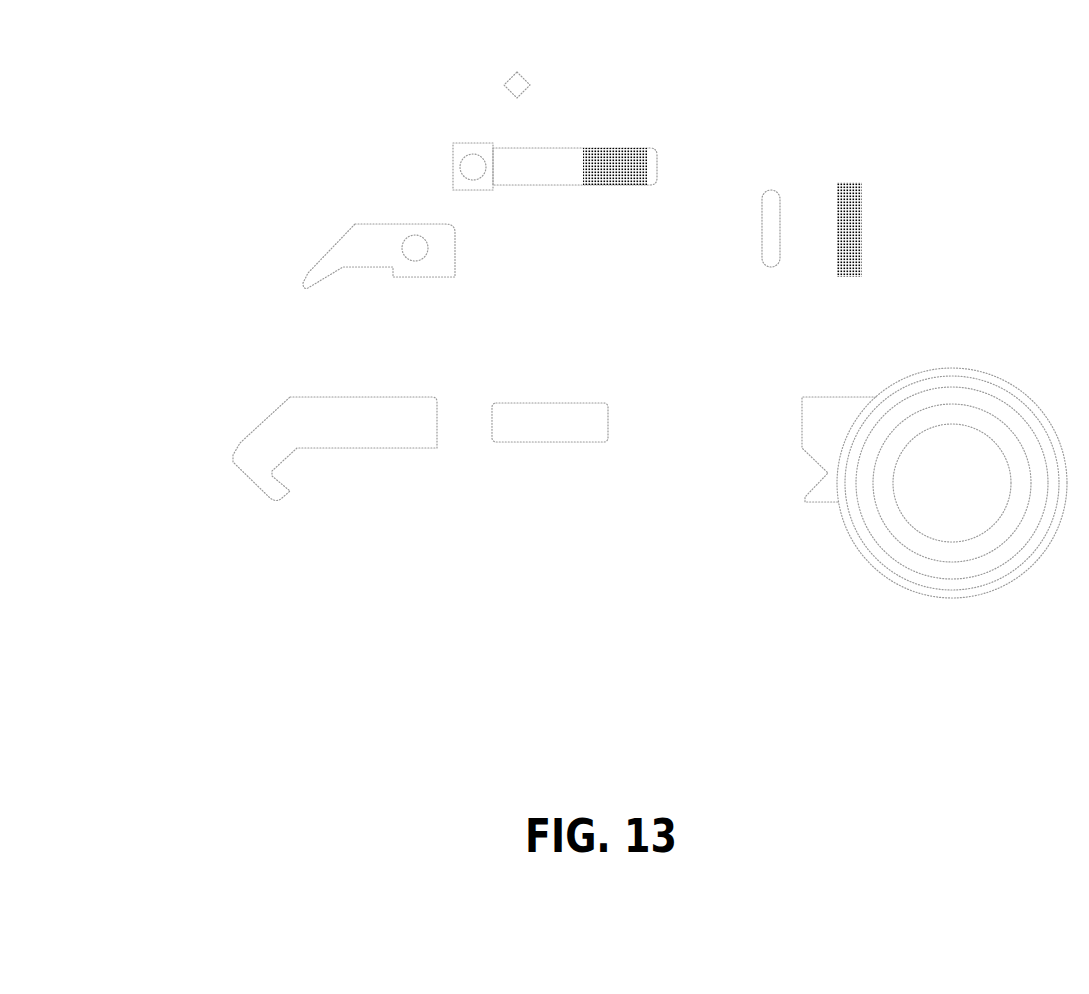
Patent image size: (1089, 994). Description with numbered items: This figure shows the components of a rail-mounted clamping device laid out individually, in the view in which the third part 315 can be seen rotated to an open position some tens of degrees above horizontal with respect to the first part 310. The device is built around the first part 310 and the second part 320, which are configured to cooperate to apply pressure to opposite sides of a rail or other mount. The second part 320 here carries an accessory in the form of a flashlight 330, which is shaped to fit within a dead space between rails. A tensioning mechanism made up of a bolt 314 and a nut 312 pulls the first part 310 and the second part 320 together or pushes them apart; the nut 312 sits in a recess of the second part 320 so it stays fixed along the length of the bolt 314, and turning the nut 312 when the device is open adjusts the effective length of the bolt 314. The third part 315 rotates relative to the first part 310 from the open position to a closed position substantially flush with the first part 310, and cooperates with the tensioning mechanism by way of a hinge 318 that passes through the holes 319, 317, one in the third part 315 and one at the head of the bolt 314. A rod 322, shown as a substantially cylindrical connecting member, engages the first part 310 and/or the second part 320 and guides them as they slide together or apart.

The first part 310 is at (273, 447).
The nut 312 is at (853, 190).
The bolt 314 is at (540, 163).
The third part 315 is at (337, 252).
The hole 317 is at (453, 170).
The hinge 318 is at (503, 85).
The hole 319 is at (425, 252).
The second part 320 is at (822, 412).
The rod 322 is at (550, 413).
The flashlight 330 is at (945, 463).